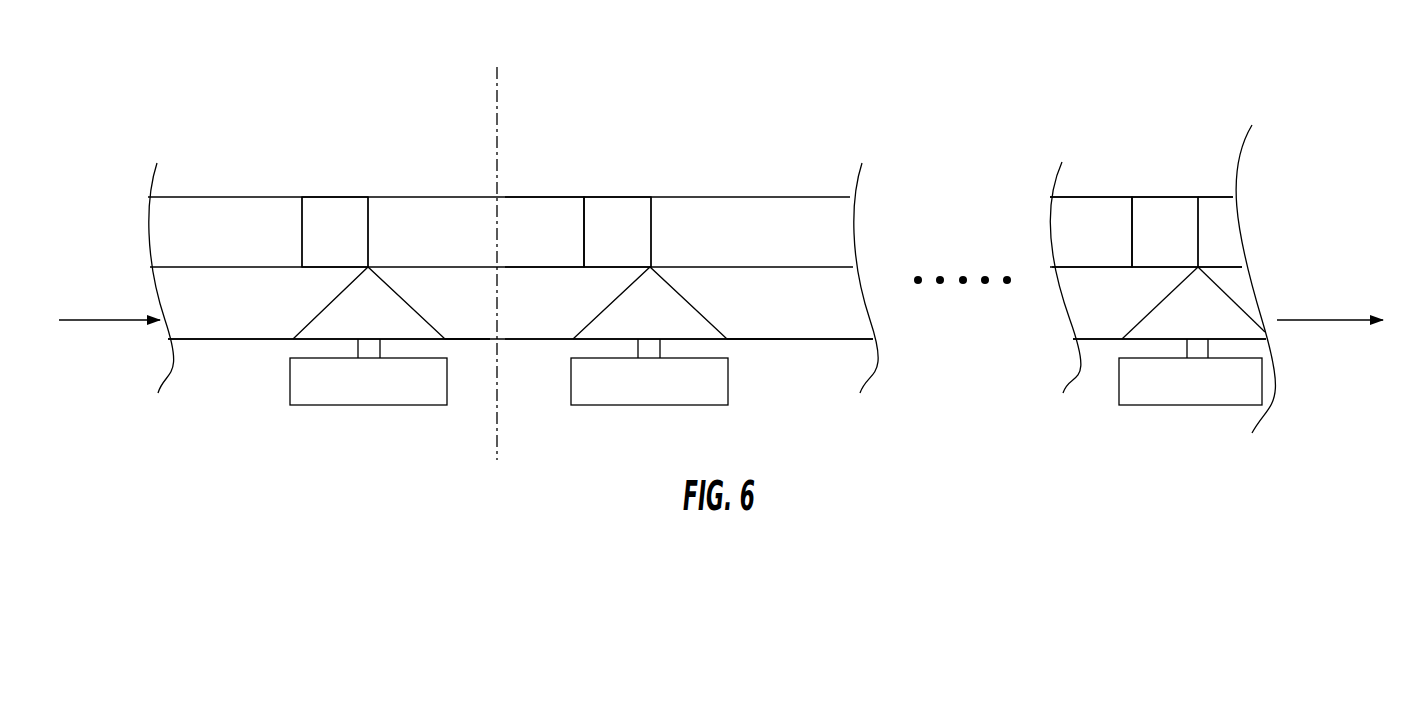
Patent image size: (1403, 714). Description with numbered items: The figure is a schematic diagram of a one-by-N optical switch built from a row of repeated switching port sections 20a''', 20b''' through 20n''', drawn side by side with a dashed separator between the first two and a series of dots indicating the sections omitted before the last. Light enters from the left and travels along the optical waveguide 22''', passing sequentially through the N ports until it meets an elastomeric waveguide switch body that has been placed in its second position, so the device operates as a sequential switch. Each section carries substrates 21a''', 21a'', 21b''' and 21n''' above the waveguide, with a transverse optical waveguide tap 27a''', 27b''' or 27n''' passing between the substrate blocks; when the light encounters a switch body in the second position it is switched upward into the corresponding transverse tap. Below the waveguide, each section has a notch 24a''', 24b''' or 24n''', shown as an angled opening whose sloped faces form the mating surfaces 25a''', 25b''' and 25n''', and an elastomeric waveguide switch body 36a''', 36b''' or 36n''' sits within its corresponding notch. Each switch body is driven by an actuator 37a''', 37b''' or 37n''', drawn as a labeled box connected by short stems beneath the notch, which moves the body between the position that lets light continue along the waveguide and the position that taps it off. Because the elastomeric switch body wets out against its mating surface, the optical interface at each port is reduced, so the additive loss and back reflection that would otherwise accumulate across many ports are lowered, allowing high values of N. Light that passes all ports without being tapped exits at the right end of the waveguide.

The optical device portion 20a''' is at (307, 150).
The optical device portion 20b''' is at (647, 145).
The optical device portion 20n''' is at (1115, 157).
The substrate 21a''' is at (218, 188).
The substrate 21a'' is at (440, 188).
The substrate 21b''' is at (651, 191).
The substrate 21n''' is at (1156, 170).
The transverse optical waveguide tap 27a''' is at (335, 200).
The transverse optical waveguide tap 27b''' is at (620, 201).
The transverse optical waveguide tap 27n''' is at (1165, 170).
The optical waveguide 22''' is at (109, 280).
The notch 24a''' is at (329, 357).
The notch 24b''' is at (642, 357).
The notch 24n''' is at (1131, 322).
The notch mating surface 25a''' is at (466, 389).
The notch mating surface 25b''' is at (800, 365).
The notch mating surface 25n''' is at (1290, 291).
The elastomeric waveguide switch body 36a''' is at (341, 334).
The elastomeric waveguide switch body 36b''' is at (680, 331).
The elastomeric waveguide switch body 36n''' is at (1130, 358).
The actuator 37a''' is at (368, 394).
The actuator 37b''' is at (655, 394).
The actuator 37n''' is at (1190, 403).